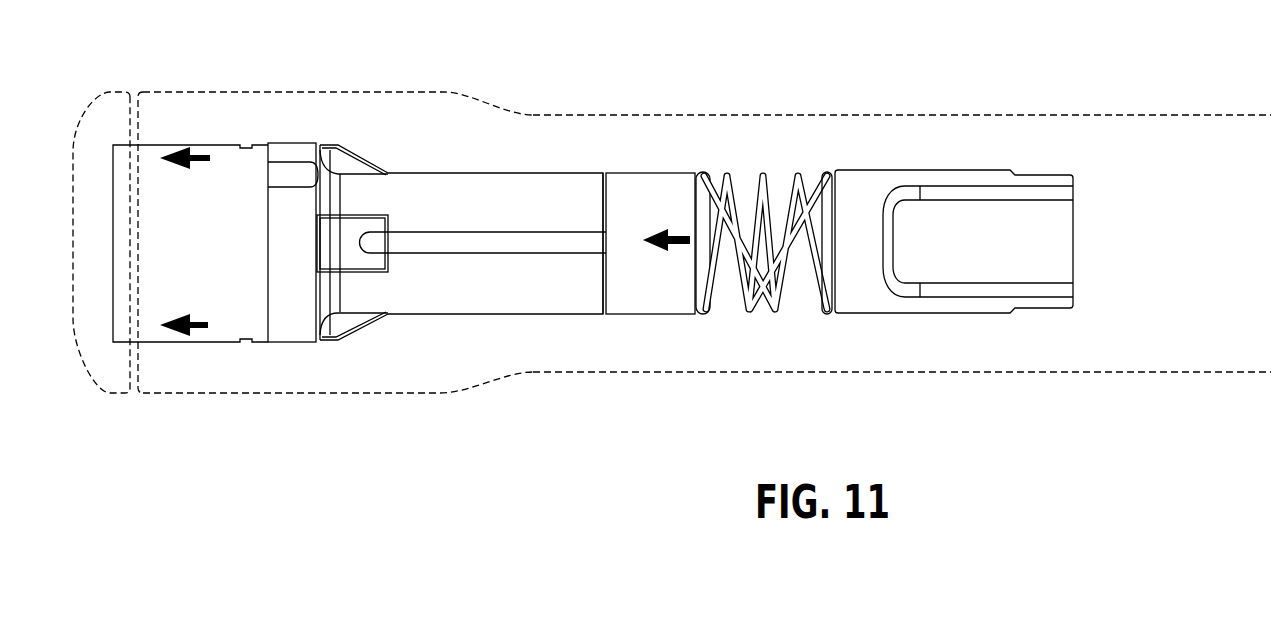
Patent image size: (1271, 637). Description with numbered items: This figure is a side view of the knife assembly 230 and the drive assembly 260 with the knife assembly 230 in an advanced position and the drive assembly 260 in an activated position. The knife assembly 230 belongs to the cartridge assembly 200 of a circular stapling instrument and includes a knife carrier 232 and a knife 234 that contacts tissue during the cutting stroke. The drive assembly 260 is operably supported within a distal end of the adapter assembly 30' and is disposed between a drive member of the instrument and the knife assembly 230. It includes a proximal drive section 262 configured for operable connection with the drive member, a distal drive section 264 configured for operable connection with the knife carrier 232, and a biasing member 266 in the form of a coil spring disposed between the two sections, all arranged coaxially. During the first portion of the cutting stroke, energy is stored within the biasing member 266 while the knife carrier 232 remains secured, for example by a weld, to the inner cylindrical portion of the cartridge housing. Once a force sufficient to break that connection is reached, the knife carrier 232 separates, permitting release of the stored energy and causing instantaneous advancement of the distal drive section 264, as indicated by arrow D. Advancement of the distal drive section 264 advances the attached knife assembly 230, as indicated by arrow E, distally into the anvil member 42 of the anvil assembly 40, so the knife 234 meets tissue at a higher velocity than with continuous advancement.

The adapter assembly 30' is at (902, 214).
The anvil assembly 40 is at (126, 68).
The anvil member 42 is at (94, 122).
The cartridge assembly 200 is at (330, 68).
The knife assembly 230 is at (461, 150).
The knife carrier 232 is at (412, 307).
The knife 234 is at (230, 334).
The drive assembly 260 is at (870, 158).
The proximal drive section 262 is at (958, 328).
The distal drive section 264 is at (603, 332).
The biasing member 266 is at (762, 173).
The arrow indicating knife assembly advancement E is at (197, 318).
The arrow indicating distal drive section advancement D is at (677, 247).